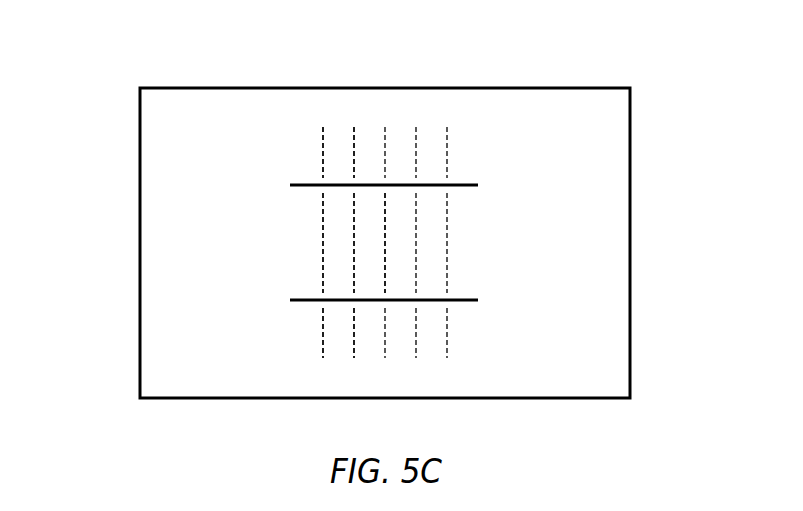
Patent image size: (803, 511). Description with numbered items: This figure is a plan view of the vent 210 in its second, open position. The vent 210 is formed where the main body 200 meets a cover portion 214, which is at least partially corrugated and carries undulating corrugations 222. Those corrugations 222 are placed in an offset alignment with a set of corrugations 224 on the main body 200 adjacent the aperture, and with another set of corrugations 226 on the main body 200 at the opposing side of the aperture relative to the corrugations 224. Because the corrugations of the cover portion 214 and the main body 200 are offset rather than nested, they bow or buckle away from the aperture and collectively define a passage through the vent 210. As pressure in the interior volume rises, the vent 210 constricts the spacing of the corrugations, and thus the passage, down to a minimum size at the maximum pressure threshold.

The main body 200 is at (170, 101).
The vent 210 is at (488, 225).
The cover portion 214 is at (462, 263).
The corrugations 222 is at (385, 267).
The set of corrugations 224 is at (323, 330).
The another set of corrugations 226 is at (323, 158).